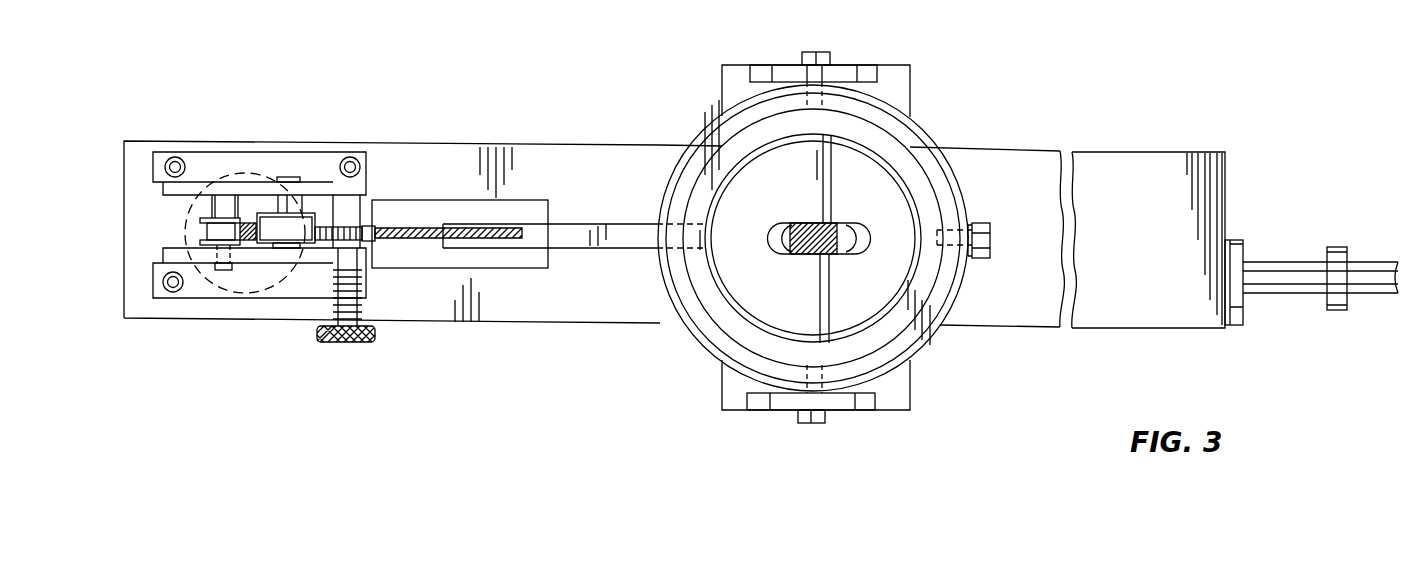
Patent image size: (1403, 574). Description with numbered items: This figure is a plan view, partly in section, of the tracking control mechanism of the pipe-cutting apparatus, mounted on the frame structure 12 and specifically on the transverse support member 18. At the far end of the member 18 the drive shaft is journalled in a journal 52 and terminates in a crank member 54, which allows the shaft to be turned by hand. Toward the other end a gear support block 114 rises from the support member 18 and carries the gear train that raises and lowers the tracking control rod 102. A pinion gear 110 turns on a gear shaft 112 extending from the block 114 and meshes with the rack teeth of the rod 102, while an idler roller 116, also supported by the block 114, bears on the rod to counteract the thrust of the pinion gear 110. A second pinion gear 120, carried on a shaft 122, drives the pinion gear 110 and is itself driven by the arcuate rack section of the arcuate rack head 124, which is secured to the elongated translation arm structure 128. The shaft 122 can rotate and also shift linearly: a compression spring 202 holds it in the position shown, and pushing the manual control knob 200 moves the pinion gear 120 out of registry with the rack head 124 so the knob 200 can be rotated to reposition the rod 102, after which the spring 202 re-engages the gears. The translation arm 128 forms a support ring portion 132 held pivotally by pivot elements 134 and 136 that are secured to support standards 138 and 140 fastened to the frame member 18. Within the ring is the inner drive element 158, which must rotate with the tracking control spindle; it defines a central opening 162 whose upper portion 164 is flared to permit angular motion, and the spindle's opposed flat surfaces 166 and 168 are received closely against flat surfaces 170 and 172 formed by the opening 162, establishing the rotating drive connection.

The frame structure 12 is at (1225, 152).
The support member 18 is at (1030, 165).
The journal 52 is at (1240, 327).
The crank member 54 is at (1340, 247).
The tracking control rod 102 is at (248, 247).
The pinion gear 110 is at (283, 230).
The gear shaft 112 is at (290, 265).
The gear support block 114 is at (247, 188).
The idler roller 116 is at (215, 232).
The second pinion gear 120 is at (373, 232).
The shaft 122 is at (357, 230).
The arcuate rack head 124 is at (420, 228).
The translation arm structure 128 is at (603, 222).
The support ring portion 132 is at (910, 130).
The pivot element 134 is at (820, 420).
The pivot element 136 is at (812, 52).
The support standard 138 is at (787, 405).
The support standard 140 is at (848, 72).
The inner drive element 158 is at (745, 288).
The central opening 162 is at (790, 265).
The upper portion of the central opening 164 is at (867, 233).
The flat surface 166 is at (823, 223).
The flat surface 168 is at (830, 255).
The flat surface 170 is at (802, 223).
The flat surface 172 is at (817, 253).
The manual control knob 200 is at (347, 345).
The compression spring 202 is at (362, 305).